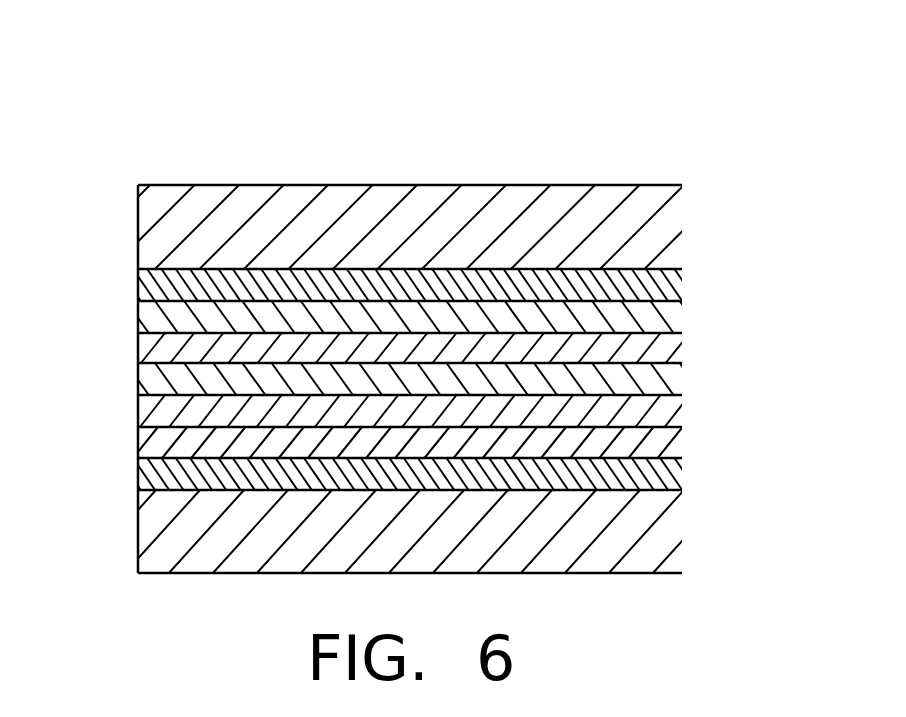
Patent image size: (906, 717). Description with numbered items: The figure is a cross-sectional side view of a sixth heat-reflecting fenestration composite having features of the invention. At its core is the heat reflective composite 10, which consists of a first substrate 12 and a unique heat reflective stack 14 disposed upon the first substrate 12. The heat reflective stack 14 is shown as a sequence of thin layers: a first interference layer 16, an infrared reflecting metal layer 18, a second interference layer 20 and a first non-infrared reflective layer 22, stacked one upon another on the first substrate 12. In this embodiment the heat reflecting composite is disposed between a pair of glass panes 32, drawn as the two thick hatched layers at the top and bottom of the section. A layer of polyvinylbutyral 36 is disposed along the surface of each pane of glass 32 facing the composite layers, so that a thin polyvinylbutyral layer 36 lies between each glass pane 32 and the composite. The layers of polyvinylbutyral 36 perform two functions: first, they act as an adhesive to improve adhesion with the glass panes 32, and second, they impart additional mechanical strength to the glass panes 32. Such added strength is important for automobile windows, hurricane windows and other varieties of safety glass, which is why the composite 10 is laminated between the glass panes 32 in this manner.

The heat reflective composite 10 is at (468, 155).
The first substrate 12 is at (655, 442).
The heat reflective stack 14 is at (119, 301).
The first interference layer 16 is at (655, 410).
The infrared reflecting metal layer 18 is at (662, 383).
The second interference layer 20 is at (660, 350).
The first non-infrared reflective layer 22 is at (660, 318).
The glass pane 32 is at (628, 229).
The layer of polyvinylbutyral 36 is at (660, 285).